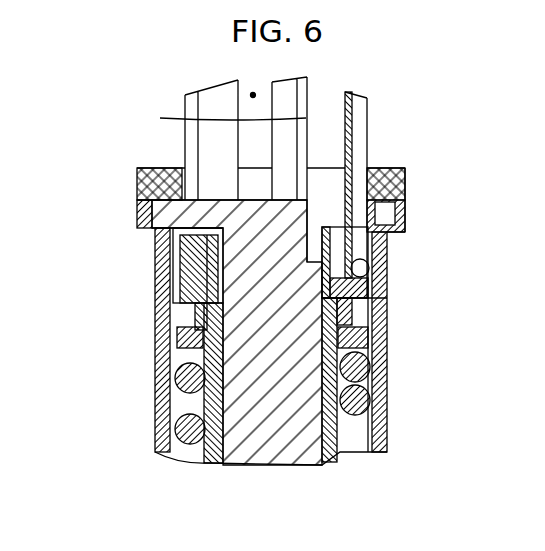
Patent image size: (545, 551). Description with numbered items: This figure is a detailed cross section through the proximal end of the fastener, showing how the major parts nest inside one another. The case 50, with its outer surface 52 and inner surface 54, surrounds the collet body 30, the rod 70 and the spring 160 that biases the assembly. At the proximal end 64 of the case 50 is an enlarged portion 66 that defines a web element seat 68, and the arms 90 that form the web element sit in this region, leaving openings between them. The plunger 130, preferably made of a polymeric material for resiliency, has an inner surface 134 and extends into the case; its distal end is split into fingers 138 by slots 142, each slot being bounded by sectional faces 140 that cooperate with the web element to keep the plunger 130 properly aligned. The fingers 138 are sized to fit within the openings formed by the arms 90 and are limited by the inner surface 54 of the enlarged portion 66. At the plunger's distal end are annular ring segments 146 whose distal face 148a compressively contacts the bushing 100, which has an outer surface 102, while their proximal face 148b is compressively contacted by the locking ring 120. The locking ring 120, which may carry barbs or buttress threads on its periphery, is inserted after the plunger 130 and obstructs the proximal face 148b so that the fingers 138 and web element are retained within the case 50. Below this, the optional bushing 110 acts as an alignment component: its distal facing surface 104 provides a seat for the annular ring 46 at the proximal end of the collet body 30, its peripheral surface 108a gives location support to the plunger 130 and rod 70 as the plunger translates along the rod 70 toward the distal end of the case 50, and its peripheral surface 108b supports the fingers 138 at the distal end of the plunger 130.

The collet body 30 is at (332, 460).
The annular ring 46 is at (205, 318).
The case 50 is at (160, 410).
The outer surface 52 is at (157, 368).
The inner surface 54 is at (357, 437).
The proximal end 64 is at (143, 164).
The enlarged portion 66 is at (128, 167).
The web element seat 68 is at (357, 250).
The rod 70 is at (268, 442).
The arms 90 is at (335, 215).
The bushing 100 is at (200, 262).
The outer surface 102 is at (372, 300).
The distal facing surface 104 is at (358, 308).
The peripheral surface 108a is at (343, 245).
The peripheral surface 108b is at (190, 248).
The bushing 110 is at (390, 338).
The locking ring 120 is at (333, 162).
The plunger 130 is at (368, 150).
The inner surface 134 is at (212, 160).
The fingers 138 is at (213, 98).
The sectional faces 140 is at (197, 130).
The slots 142 is at (255, 92).
The annular ring segments 146 is at (392, 248).
The distal face 148a is at (370, 287).
The proximal face 148b is at (362, 200).
The spring 160 is at (183, 440).